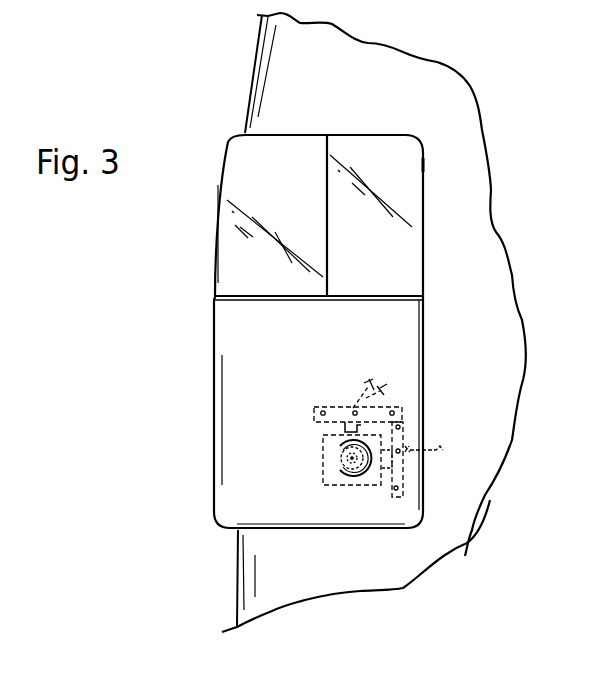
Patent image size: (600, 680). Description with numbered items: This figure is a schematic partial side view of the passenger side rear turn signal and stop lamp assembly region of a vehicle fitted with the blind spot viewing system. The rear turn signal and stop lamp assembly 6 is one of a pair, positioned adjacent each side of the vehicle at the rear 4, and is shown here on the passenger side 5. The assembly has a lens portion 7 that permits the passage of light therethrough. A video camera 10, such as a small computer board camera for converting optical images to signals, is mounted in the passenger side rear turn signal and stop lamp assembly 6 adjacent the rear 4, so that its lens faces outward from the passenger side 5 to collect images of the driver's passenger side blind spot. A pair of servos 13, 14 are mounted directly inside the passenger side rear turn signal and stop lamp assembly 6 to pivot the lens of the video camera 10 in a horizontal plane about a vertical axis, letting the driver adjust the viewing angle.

The rear 4 is at (254, 57).
The passenger side 5 is at (458, 110).
The rear turn signal and stop lamp assembly 6 is at (213, 246).
The lens portion 7 is at (250, 157).
The video camera 10 is at (352, 485).
The servo 13 is at (361, 425).
The servo 14 is at (388, 473).